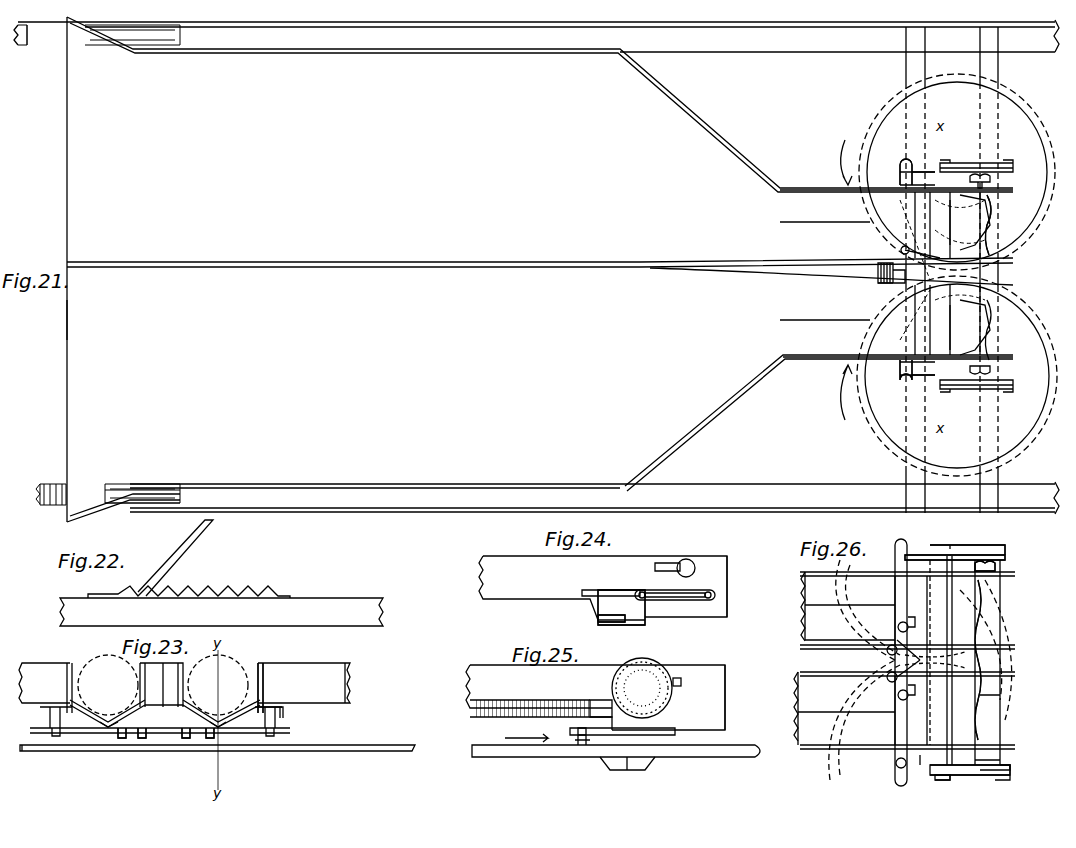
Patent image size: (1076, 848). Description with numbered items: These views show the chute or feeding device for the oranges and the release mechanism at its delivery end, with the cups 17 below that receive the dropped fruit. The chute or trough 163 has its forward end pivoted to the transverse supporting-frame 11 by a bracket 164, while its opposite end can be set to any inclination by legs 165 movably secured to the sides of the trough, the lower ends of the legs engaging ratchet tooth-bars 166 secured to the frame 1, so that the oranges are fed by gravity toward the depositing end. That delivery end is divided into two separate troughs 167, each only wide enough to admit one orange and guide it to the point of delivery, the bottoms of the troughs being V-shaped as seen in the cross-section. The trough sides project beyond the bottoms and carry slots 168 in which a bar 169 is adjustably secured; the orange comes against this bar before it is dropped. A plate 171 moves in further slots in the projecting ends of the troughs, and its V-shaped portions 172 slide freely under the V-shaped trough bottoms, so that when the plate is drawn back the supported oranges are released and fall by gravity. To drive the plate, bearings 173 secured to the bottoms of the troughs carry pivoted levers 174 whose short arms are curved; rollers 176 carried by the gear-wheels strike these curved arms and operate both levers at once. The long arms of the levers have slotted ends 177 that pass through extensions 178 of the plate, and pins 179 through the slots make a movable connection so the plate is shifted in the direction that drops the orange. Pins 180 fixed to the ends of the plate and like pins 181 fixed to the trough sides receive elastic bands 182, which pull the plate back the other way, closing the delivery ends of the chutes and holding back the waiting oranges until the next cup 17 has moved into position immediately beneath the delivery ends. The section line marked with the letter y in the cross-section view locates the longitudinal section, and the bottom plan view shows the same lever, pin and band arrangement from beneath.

In FIG. 22, the frame 1 is at (344, 606).
In FIG. 21, the transverse supporting-frame 11 is at (906, 70).
In FIG. 21, the rail 17 is at (960, 215).
In FIG. 25, the rail 17 is at (636, 764).
In FIG. 21, the chute or trough 163 is at (67, 320).
In FIG. 21, the bracket 164 is at (878, 275).
In FIG. 21, the legs 165 is at (146, 490).
In FIG. 22, the legs 165 is at (175, 552).
In FIG. 23, the legs 165 is at (348, 668).
In FIG. 21, the ratchet tooth-bars 166 is at (110, 505).
In FIG. 22, the ratchet tooth-bars 166 is at (189, 582).
In FIG. 21, the troughs 167 is at (820, 180).
In FIG. 23, the troughs 167 is at (265, 688).
In FIG. 24, the troughs 167 is at (722, 560).
In FIG. 25, the troughs 167 is at (716, 665).
In FIG. 26, the troughs 167 is at (820, 585).
In FIG. 24, the slots 168 is at (672, 562).
In FIG. 21, the bar 169 is at (985, 222).
In FIG. 25, the bar 169 is at (682, 684).
In FIG. 26, the bar 169 is at (980, 588).
In FIG. 21, the plate 171 is at (905, 252).
In FIG. 23, the plate 171 is at (165, 708).
In FIG. 24, the plate 171 is at (610, 622).
In FIG. 25, the plate 171 is at (649, 691).
In FIG. 26, the plate 171 is at (965, 660).
In FIG. 23, the V-shaped portions 172 is at (108, 728).
In FIG. 23, the bearings 173 is at (122, 740).
In FIG. 26, the bearings 173 is at (898, 622).
In FIG. 21, the levers 174 is at (920, 195).
In FIG. 23, the levers 174 is at (55, 725).
In FIG. 25, the levers 174 is at (595, 728).
In FIG. 26, the levers 174 is at (896, 590).
In FIG. 23, the rollers 176 is at (142, 740).
In FIG. 25, the rollers 176 is at (578, 738).
In FIG. 26, the rollers 176 is at (886, 644).
In FIG. 21, the slotted ends 177 is at (900, 170).
In FIG. 26, the slotted ends 177 is at (903, 545).
In FIG. 21, the extensions 178 is at (930, 172).
In FIG. 23, the extensions 178 is at (283, 715).
In FIG. 26, the extensions 178 is at (920, 560).
In FIG. 24, the pins 179 is at (600, 590).
In FIG. 26, the pins 179 is at (898, 760).
In FIG. 24, the pins 180 is at (645, 610).
In FIG. 26, the pins 180 is at (942, 780).
In FIG. 21, the pins 181 is at (1000, 389).
In FIG. 24, the pins 181 is at (715, 596).
In FIG. 26, the pins 181 is at (1003, 548).
In FIG. 21, the elastic bands 182 is at (965, 165).
In FIG. 24, the elastic bands 182 is at (712, 588).
In FIG. 26, the elastic bands 182 is at (970, 660).